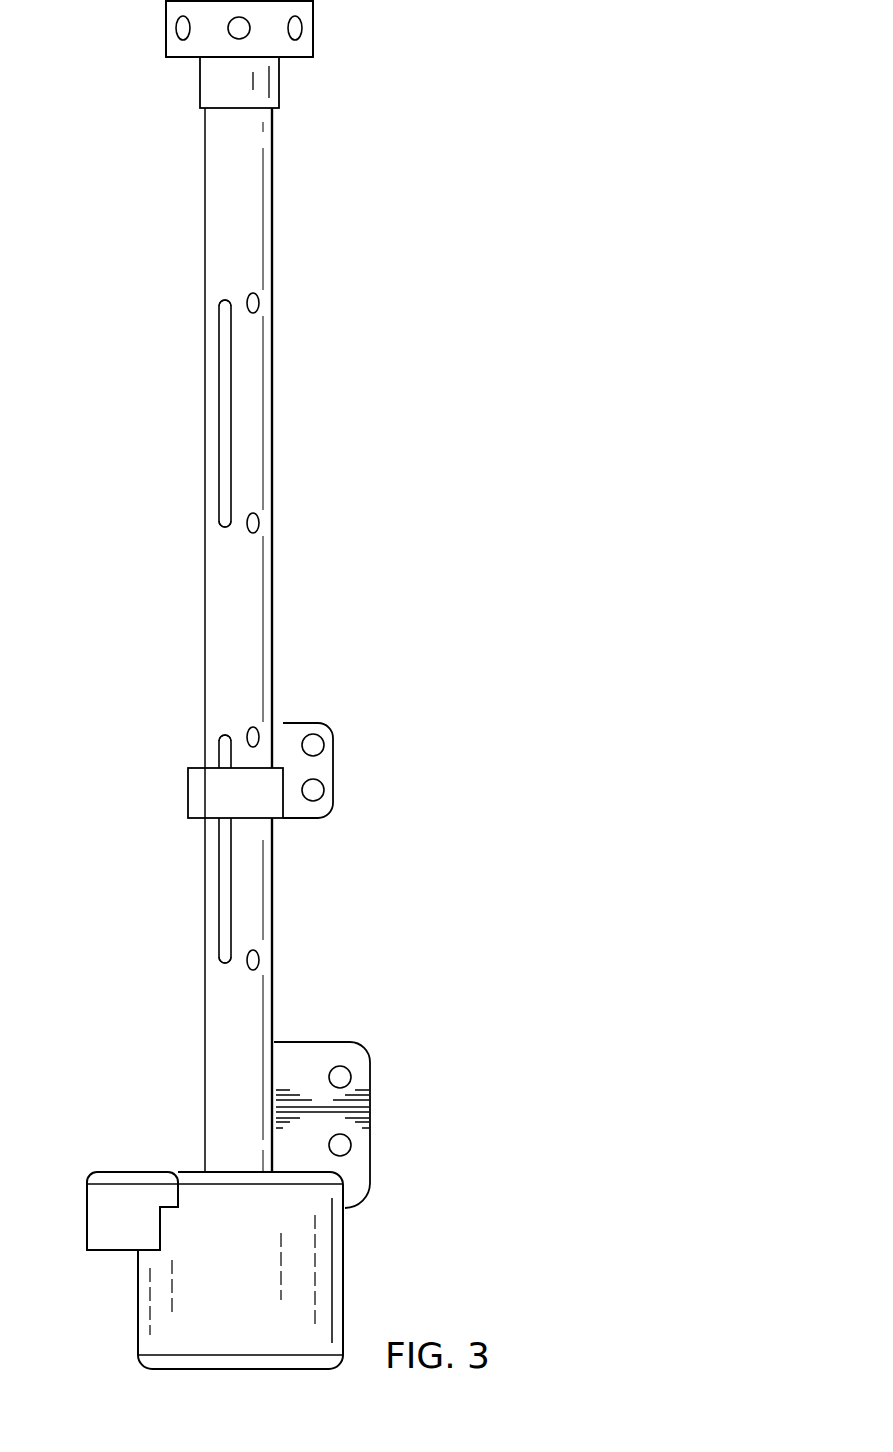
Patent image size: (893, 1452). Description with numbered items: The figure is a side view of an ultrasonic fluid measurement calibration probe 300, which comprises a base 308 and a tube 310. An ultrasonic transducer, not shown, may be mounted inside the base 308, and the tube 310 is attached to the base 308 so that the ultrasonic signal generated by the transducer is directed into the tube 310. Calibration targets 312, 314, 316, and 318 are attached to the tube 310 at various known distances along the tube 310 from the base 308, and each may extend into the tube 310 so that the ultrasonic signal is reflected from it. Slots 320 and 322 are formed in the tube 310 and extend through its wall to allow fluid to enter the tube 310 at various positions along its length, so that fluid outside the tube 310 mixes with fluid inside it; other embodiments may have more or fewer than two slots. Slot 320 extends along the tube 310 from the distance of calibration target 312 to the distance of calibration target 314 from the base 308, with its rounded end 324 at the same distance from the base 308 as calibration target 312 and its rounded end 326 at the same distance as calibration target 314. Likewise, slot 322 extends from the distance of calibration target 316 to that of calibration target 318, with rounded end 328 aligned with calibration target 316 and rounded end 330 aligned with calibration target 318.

The probe 300 is at (480, 158).
The base 308 is at (343, 1268).
The tube 310 is at (205, 210).
The calibration target 312 is at (258, 959).
The calibration target 314 is at (258, 736).
The calibration target 316 is at (258, 523).
The calibration target 318 is at (258, 303).
The slot 320 is at (231, 913).
The slot 322 is at (230, 367).
The rounded end 324 is at (228, 962).
The rounded end 326 is at (228, 735).
The rounded end 328 is at (228, 528).
The rounded end 330 is at (228, 300).